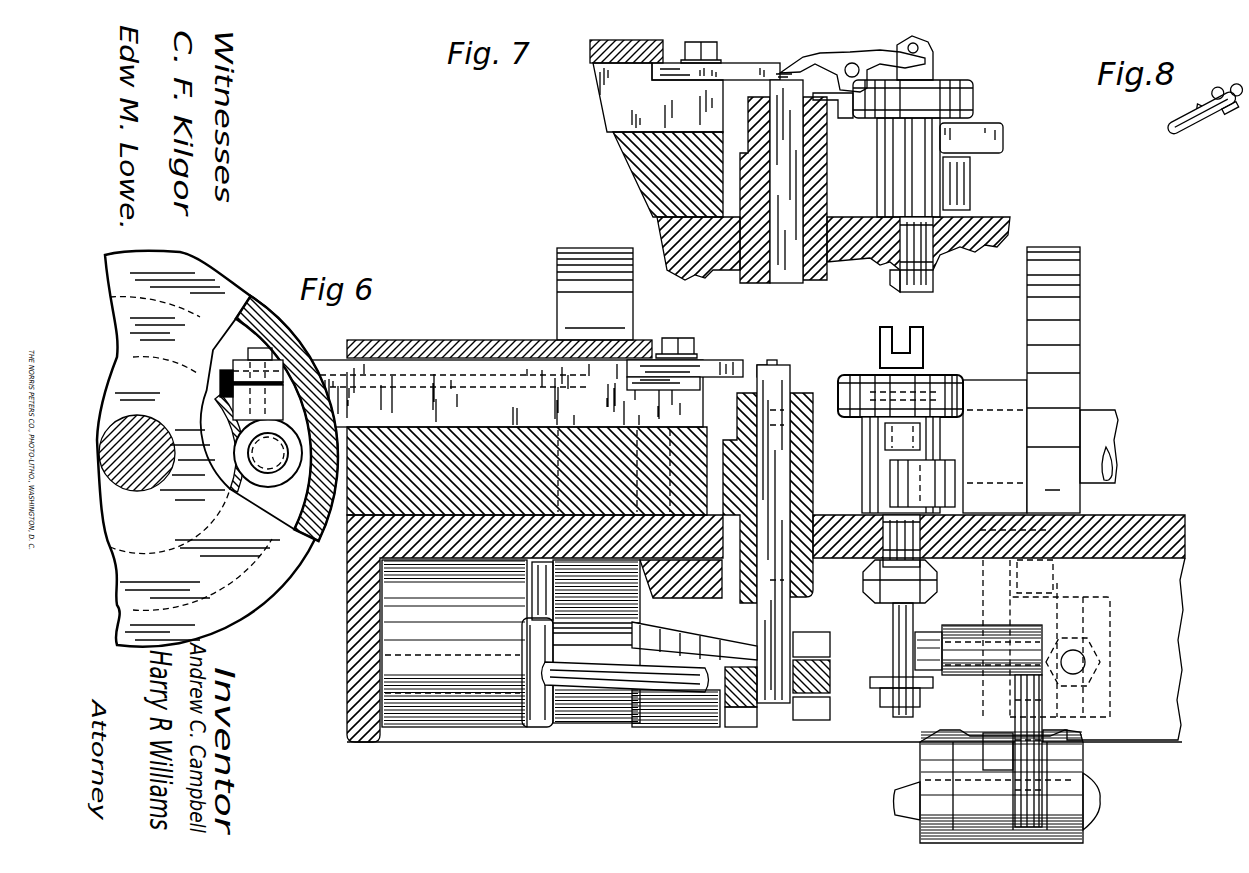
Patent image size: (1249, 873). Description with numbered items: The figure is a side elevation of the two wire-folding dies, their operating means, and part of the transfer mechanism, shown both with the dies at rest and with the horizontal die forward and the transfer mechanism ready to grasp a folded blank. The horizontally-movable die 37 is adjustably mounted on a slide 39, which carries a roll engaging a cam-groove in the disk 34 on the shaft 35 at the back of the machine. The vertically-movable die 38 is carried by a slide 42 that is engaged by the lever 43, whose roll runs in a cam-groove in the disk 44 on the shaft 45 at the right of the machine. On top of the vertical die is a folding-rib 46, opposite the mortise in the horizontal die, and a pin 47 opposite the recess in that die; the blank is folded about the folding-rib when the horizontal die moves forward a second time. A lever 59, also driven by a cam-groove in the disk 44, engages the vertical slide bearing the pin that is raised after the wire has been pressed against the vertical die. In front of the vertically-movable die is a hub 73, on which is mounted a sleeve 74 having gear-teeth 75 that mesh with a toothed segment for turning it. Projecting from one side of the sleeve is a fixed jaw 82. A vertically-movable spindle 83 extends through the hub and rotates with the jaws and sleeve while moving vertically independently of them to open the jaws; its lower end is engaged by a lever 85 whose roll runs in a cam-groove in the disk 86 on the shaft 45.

In FIG. 6, the disk 34 is at (217, 449).
In FIG. 6, the shaft 35 is at (160, 415).
In FIG. 7, the horizontally-movable die 37 is at (734, 63).
In FIG. 6, the horizontally-movable die 37 is at (728, 360).
In FIG. 7, the vertically-movable die 38 is at (782, 172).
In FIG. 6, the vertically-movable die 38 is at (778, 378).
In FIG. 7, the slide 39 is at (656, 128).
In FIG. 6, the slide 39 is at (508, 427).
In FIG. 6, the slide 42 is at (797, 607).
In FIG. 6, the lever 43 is at (815, 643).
In FIG. 6, the disk 44 is at (595, 294).
In FIG. 6, the shaft 45 is at (1099, 446).
In FIG. 7, the folding-rib 46 is at (787, 75).
In FIG. 6, the folding-rib 46 is at (776, 360).
In FIG. 6, the pin 47 is at (762, 365).
In FIG. 6, the lever 59 is at (540, 598).
In FIG. 7, the hub 73 is at (920, 275).
In FIG. 6, the hub 73 is at (890, 540).
In FIG. 7, the sleeve 74 is at (893, 200).
In FIG. 6, the sleeve 74 is at (940, 437).
In FIG. 7, the gear-teeth 75 is at (970, 193).
In FIG. 6, the gear-teeth 75 is at (955, 480).
In FIG. 7, the fixed jaw 82 is at (893, 111).
In FIG. 6, the spindle 83 is at (897, 630).
In FIG. 6, the lever 85 is at (923, 697).
In FIG. 6, the disk 86 is at (1053, 380).